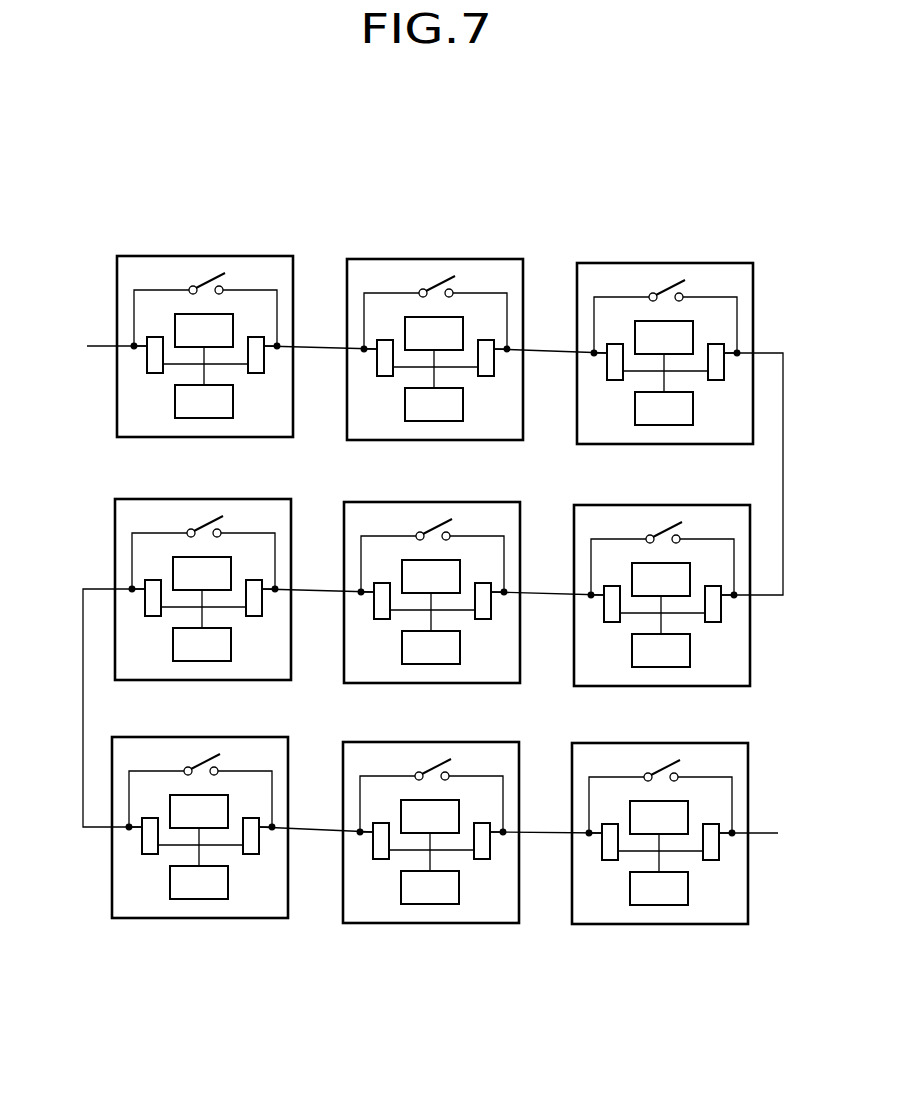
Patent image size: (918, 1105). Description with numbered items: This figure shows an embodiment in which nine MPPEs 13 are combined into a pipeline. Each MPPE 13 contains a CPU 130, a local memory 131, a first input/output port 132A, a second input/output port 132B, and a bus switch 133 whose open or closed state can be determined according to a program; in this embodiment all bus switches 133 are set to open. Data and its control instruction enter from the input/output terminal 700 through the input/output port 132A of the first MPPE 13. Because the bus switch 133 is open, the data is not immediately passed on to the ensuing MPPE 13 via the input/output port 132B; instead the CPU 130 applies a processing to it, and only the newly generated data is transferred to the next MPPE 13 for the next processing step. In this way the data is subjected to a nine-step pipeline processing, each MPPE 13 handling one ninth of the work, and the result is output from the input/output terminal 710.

The MPPE 13 is at (602, 743).
The CPU 130 is at (180, 313).
The local memory 131 is at (173, 403).
The input/output port 132A is at (145, 364).
The input/output port 132B is at (256, 373).
The bus switch 133 is at (660, 770).
The input/output terminal 700 is at (101, 344).
The input/output terminal 710 is at (768, 832).